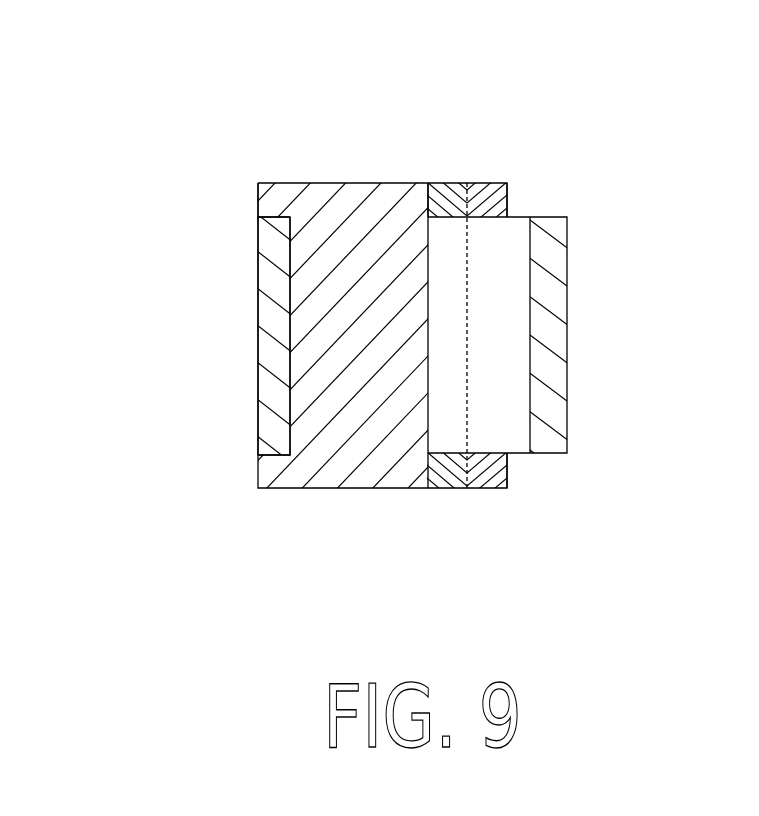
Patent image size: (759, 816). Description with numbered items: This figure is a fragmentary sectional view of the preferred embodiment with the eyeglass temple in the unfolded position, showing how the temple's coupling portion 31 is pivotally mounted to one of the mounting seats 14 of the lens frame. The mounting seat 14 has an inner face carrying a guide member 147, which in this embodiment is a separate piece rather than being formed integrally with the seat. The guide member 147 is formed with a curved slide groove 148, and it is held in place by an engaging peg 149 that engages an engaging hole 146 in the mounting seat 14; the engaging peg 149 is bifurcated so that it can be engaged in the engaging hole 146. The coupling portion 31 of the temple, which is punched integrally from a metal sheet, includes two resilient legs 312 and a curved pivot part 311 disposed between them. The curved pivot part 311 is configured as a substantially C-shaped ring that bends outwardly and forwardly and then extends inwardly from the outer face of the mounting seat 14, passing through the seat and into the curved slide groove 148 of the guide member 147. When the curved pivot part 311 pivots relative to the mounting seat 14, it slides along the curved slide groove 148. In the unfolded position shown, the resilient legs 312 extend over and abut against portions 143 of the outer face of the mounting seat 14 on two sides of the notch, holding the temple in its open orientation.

The mounting seat 14 is at (368, 170).
The engaging hole 146 is at (437, 205).
The portions of the outer face 143 is at (465, 203).
The resilient leg 312 is at (507, 195).
The coupling portion 31 is at (571, 324).
The curved pivot part 311 is at (275, 330).
The curved slide groove 148 is at (290, 382).
The guide member 147 is at (272, 205).
The engaging peg 149 is at (448, 345).